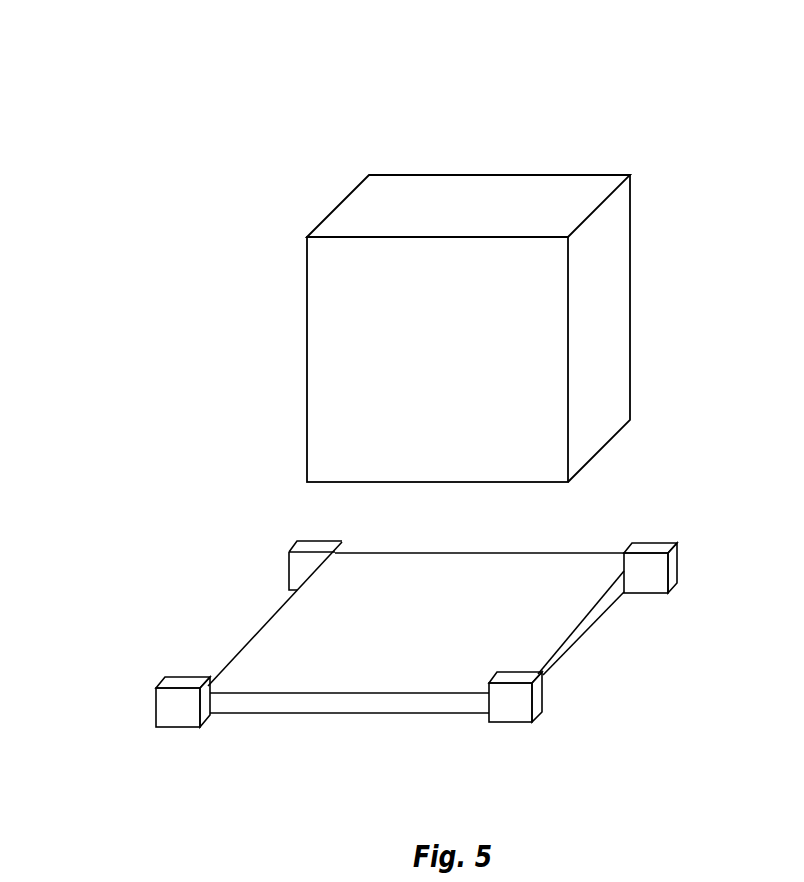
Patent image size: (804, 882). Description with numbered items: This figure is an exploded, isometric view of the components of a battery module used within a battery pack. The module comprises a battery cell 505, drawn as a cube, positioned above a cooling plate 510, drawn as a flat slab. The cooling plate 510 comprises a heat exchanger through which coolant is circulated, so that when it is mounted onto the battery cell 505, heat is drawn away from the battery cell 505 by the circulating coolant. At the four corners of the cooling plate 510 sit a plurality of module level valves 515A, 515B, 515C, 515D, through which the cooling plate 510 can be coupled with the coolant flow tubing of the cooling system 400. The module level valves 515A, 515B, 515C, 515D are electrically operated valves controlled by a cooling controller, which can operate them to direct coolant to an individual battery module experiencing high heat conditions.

The cooling system 400 is at (628, 108).
The battery cell 505 is at (468, 328).
The cooling plate 510 is at (416, 627).
The module level valve 515A is at (677, 565).
The module level valve 515B is at (545, 690).
The module level valve 515C is at (156, 705).
The module level valve 515D is at (289, 573).